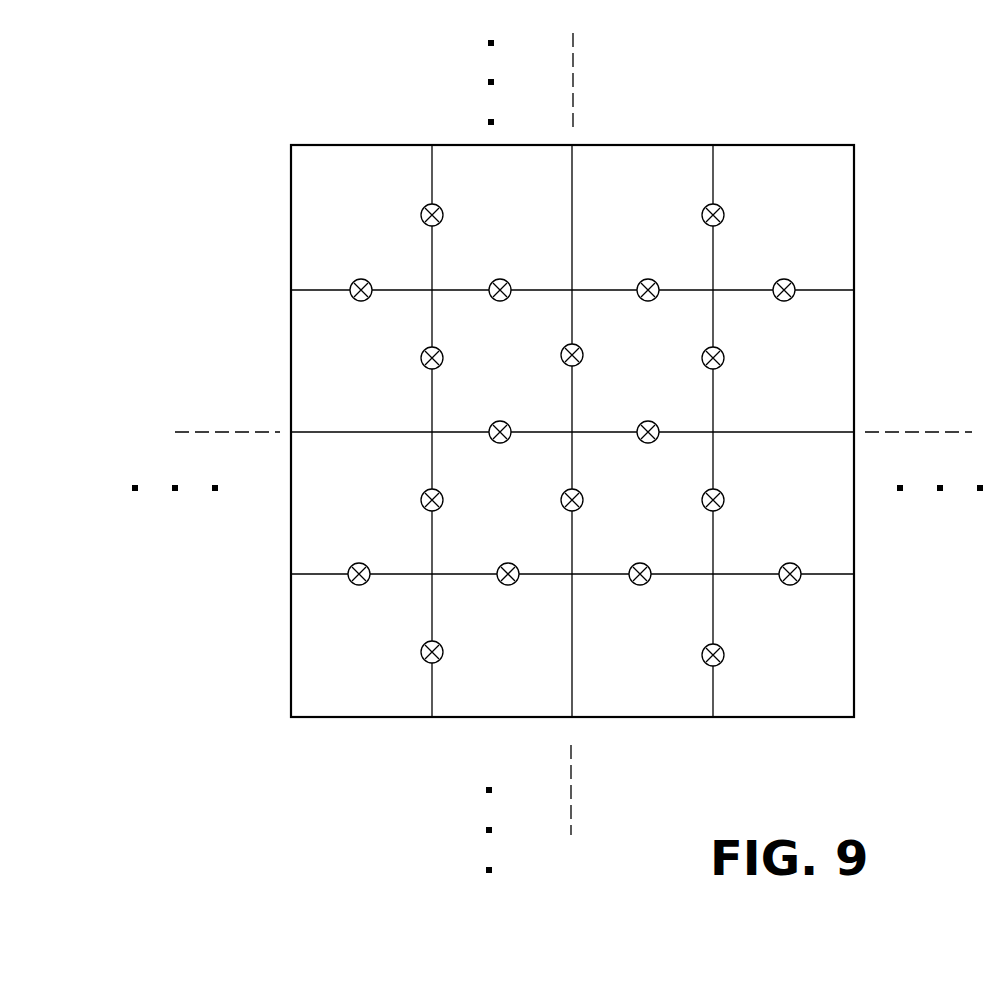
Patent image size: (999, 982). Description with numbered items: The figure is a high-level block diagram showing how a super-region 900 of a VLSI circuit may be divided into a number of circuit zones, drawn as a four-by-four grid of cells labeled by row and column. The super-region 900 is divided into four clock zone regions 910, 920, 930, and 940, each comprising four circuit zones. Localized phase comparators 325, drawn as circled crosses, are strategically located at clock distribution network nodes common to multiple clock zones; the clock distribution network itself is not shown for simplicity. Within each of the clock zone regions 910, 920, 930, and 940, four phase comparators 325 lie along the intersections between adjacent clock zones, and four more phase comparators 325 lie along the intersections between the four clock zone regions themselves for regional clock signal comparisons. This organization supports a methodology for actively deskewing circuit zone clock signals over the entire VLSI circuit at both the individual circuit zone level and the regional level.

The super-region 900 is at (611, 419).
The clock zone region 910 is at (430, 136).
The clock zone region 920 is at (733, 136).
The clock zone region 930 is at (355, 724).
The clock zone region 940 is at (760, 726).
The localized phase comparator 325 is at (792, 293).